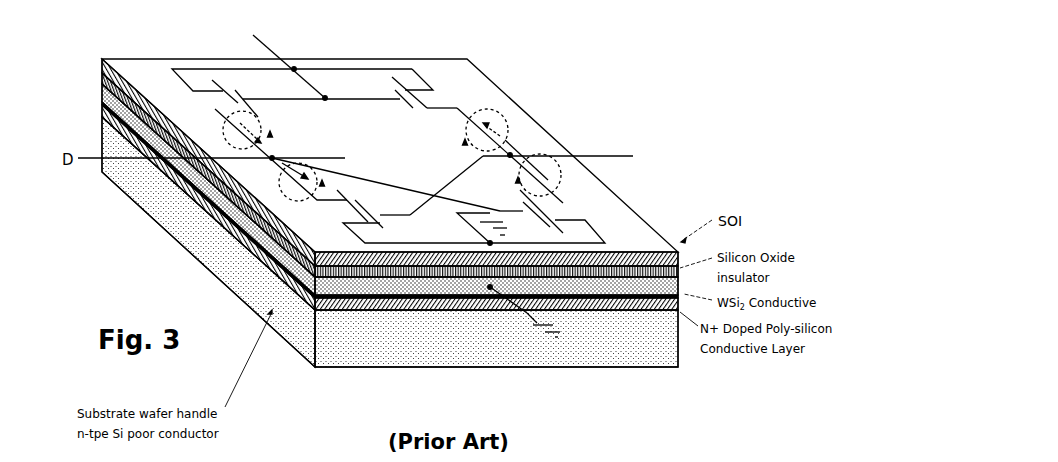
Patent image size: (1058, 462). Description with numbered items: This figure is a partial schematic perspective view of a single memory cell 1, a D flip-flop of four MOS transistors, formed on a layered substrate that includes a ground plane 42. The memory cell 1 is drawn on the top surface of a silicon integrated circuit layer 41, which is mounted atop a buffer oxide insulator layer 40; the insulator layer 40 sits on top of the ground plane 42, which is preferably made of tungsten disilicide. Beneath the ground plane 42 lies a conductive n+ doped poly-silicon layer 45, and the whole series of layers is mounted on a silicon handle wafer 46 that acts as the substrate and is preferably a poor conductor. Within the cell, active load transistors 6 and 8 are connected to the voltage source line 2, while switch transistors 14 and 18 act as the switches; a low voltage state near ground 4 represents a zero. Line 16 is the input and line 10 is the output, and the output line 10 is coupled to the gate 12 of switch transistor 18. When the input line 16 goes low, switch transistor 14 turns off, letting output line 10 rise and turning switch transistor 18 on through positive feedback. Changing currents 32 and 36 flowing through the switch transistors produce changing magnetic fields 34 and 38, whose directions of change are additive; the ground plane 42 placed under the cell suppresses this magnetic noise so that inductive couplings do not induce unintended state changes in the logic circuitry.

The memory cell 1 is at (152, 48).
The VDD line 2 is at (258, 40).
The ground 4 is at (473, 215).
The active load transistor 6 is at (238, 92).
The active load transistor 8 is at (411, 105).
The output line 10 is at (606, 156).
The gate 12 is at (383, 218).
The switch transistor 14 is at (516, 207).
The input line 16 is at (237, 160).
The switch transistor 18 is at (348, 205).
The changing current 32 is at (275, 147).
The magnetic field 34 is at (224, 138).
The changing current 36 is at (531, 146).
The magnetic field 38 is at (484, 110).
The insulator layer 40 is at (102, 72).
The silicon integrated circuit layer 41 is at (102, 61).
The ground plane 42 is at (102, 97).
The poly-silicon layer 45 is at (102, 114).
The silicon handle wafer 46 is at (135, 190).